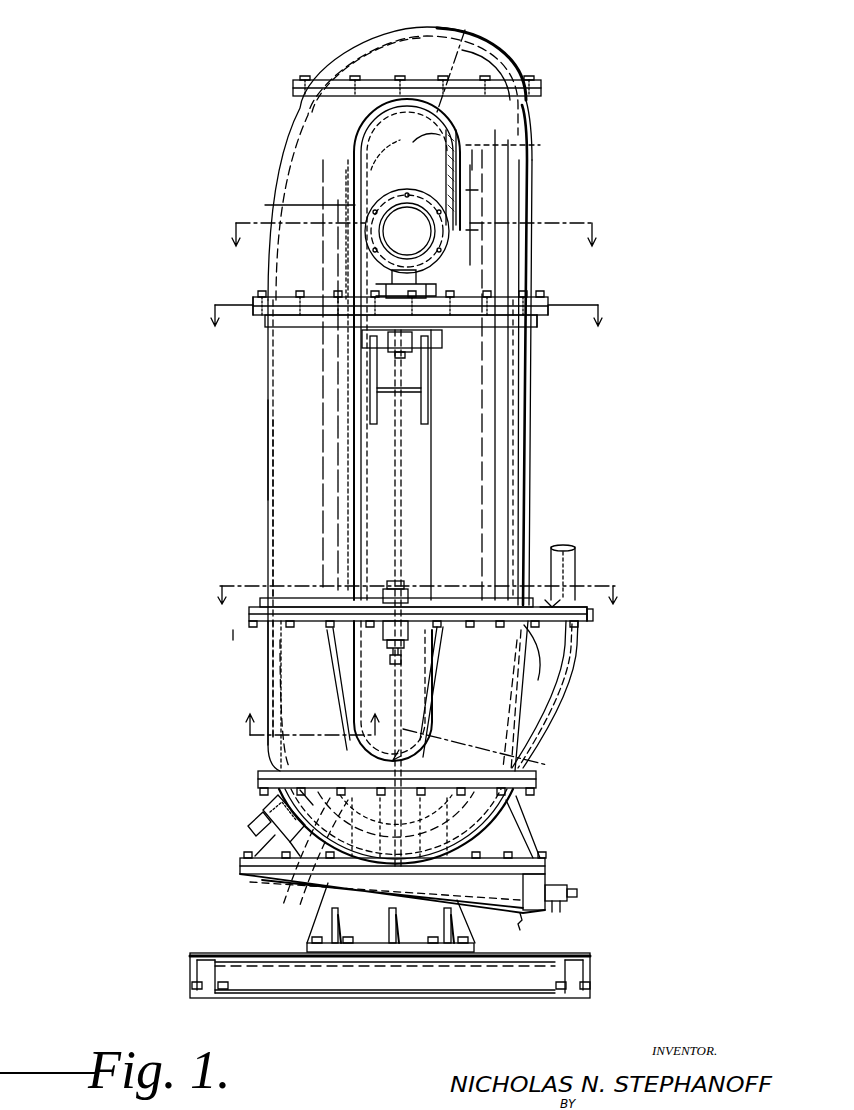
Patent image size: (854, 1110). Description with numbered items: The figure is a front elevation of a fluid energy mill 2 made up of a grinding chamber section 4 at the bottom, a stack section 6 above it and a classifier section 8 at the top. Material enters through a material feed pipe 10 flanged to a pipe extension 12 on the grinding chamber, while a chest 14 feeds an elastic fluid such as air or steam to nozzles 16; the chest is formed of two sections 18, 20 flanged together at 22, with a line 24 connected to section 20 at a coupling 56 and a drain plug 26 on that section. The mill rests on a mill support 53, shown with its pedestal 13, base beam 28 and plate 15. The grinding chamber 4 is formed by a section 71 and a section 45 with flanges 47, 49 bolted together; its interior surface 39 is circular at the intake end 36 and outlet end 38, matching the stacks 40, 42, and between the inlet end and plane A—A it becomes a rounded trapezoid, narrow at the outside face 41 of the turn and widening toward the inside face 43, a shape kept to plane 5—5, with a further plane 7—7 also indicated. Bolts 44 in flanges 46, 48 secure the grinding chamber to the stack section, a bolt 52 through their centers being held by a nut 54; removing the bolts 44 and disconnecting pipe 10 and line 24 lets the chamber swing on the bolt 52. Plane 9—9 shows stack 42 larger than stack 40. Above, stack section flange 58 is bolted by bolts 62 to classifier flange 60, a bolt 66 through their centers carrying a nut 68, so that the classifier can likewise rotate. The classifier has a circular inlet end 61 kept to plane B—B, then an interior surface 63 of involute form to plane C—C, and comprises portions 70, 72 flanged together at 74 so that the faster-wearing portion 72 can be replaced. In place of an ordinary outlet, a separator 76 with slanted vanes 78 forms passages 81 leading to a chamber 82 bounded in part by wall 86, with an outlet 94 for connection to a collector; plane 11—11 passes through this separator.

The mill 2 is at (227, 468).
The grinding chamber section 4 is at (562, 804).
The plane 5- 5 is at (400, 747).
The stack section 6 is at (546, 442).
The plane 7- 7 is at (311, 714).
The classifier section 8 is at (563, 145).
The plane 9- 9 is at (416, 584).
The material feed pipe 10 is at (403, 327).
The plane 11- 11 is at (407, 206).
The pipe extension 12 is at (284, 127).
The pedestal 13 is at (391, 917).
The chest 14 is at (272, 842).
The support plate 15 is at (469, 890).
The nozzles 16 is at (283, 898).
The chest section 18 is at (525, 852).
The chest section 20 is at (480, 912).
The flange 22 is at (242, 866).
The line 24 is at (562, 905).
The drain plug 26 is at (531, 926).
The base beam 28 is at (390, 975).
The intake end 36 is at (540, 628).
The outlet end 38 is at (300, 620).
The interior surface 39 is at (447, 672).
The stack 40 is at (512, 507).
The outside face 41 is at (512, 692).
The stack 42 is at (282, 495).
The inside face 43 is at (428, 712).
The bolts 44 is at (253, 627).
The section 45 is at (492, 815).
The flange 46 is at (548, 605).
The flange 47 is at (263, 776).
The flange 48 is at (593, 615).
The flange 49 is at (258, 786).
The bolt 52 is at (398, 580).
The mill support 53 is at (422, 470).
The nut 54 is at (392, 650).
The coupling 56 is at (567, 888).
The stack section flange 58 is at (548, 312).
The classifier section flange 60 is at (548, 300).
The inlet end 61 is at (262, 294).
The bolts 62 is at (300, 290).
The interior surface 63 is at (380, 47).
The bolt 66 is at (418, 278).
The nut 68 is at (388, 343).
The classifier portion 70 is at (352, 145).
The section 71 is at (276, 692).
The classifier portion 72 is at (470, 60).
The flange 74 is at (293, 88).
The separator 76 is at (450, 222).
The vanes 78 is at (465, 170).
The passages 81 is at (479, 207).
The chamber 82 is at (432, 152).
The wall 86 is at (360, 162).
The outlet 94 is at (372, 195).
The plane A- A is at (482, 746).
The plane B- B is at (308, 194).
The plane C- C is at (442, 78).